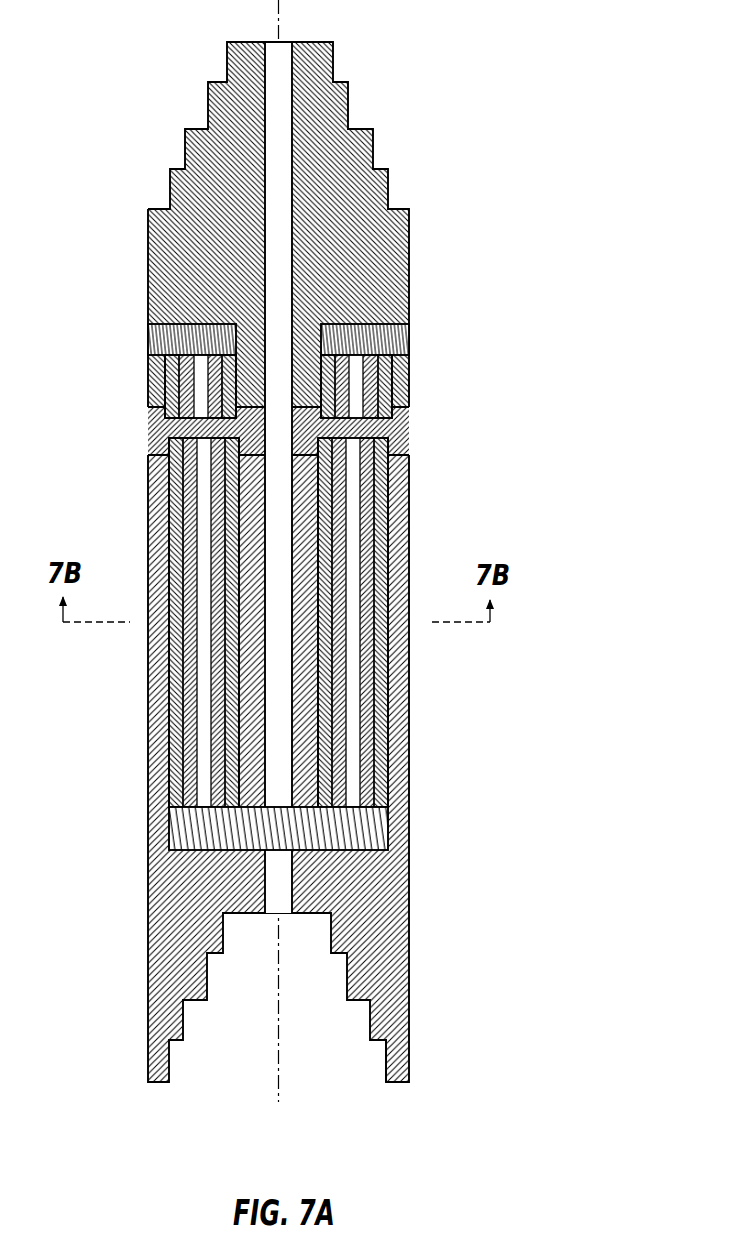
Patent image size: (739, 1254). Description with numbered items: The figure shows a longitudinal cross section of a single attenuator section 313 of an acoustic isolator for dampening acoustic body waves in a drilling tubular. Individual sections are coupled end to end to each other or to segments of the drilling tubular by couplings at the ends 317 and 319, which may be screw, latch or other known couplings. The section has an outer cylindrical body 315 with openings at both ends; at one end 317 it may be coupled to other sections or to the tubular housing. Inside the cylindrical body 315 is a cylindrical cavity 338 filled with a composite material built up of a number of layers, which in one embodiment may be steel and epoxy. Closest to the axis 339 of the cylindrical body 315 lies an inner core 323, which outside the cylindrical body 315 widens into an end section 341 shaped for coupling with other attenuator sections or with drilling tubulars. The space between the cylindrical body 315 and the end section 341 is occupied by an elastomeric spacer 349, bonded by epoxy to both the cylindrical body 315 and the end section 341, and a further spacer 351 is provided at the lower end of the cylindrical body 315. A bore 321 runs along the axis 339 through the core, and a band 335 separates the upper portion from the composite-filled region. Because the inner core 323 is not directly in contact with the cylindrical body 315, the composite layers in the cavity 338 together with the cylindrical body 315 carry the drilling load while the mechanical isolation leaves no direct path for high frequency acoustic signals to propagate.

The attenuator section 313 is at (488, 748).
The cylindrical body 315 is at (409, 940).
The end 317 is at (370, 1043).
The end 319 is at (333, 42).
The central bore 321 is at (268, 915).
The inner core 323 is at (308, 512).
The spacer band 335 is at (409, 430).
The cylindrical cavity 338 is at (387, 720).
The axis 339 is at (277, 1102).
The end section 341 is at (409, 260).
The elastomeric spacer 349 is at (409, 343).
The spacer 351 is at (387, 830).